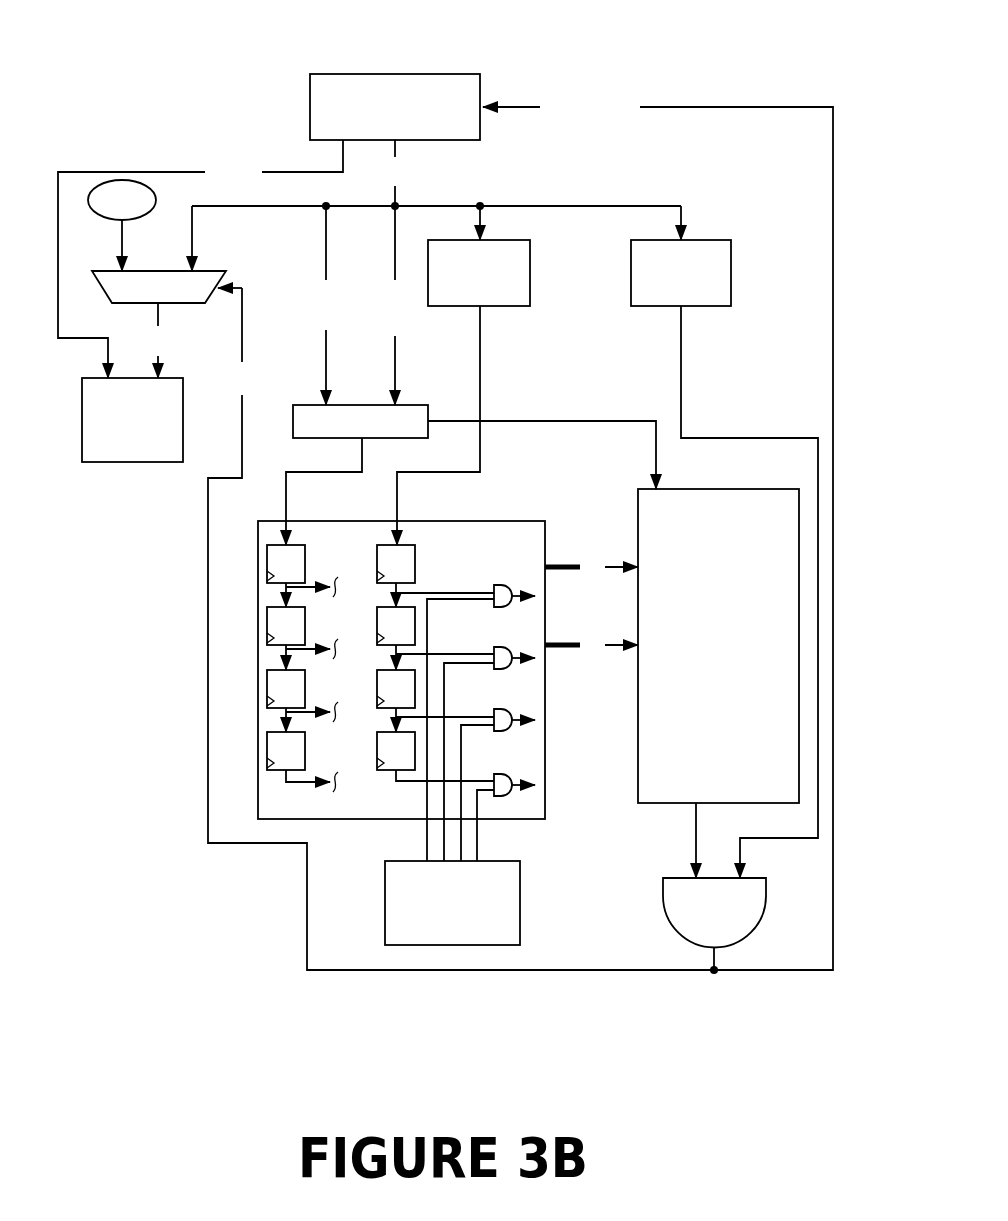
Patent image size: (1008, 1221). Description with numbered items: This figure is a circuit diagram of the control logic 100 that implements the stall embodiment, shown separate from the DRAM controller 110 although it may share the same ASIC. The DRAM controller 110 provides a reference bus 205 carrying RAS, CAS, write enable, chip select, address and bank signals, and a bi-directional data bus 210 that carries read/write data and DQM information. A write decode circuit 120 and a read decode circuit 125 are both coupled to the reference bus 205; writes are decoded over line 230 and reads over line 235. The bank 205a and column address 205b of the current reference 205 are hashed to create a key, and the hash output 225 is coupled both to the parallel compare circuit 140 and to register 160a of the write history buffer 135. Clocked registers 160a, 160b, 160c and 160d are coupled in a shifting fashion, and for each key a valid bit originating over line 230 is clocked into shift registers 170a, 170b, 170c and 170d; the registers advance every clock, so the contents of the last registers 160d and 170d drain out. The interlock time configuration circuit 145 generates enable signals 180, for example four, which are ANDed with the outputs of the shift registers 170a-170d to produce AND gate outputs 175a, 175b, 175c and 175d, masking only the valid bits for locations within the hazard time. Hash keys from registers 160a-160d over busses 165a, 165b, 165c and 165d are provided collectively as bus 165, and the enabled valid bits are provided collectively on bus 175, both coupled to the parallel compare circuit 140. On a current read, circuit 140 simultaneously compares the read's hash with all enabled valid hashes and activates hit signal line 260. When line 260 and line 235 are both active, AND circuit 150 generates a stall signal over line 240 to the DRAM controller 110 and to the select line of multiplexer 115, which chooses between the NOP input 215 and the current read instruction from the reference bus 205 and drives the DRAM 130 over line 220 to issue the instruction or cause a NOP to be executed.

The control logic 100 is at (136, 45).
The DRAM controller 110 is at (455, 141).
The multiplexer 115 is at (208, 271).
The write decode circuit 120 is at (530, 288).
The read decode circuit 125 is at (731, 288).
The DRAM 130 is at (147, 448).
The write history buffer 135 is at (525, 546).
The parallel compare circuit 140 is at (412, 405).
The interlock time configuration circuit 145 is at (520, 917).
The AND circuit 150 is at (727, 935).
The register 160a is at (303, 570).
The register 160b is at (303, 632).
The register 160c is at (303, 695).
The register 160d is at (303, 757).
The bus 165a is at (311, 584).
The bus 165b is at (311, 646).
The bus 165c is at (311, 708).
The bus 165d is at (311, 778).
The bus 165 is at (558, 567).
The shift register 170a is at (413, 570).
The shift register 170b is at (413, 632).
The shift register 170c is at (413, 695).
The shift register 170d is at (413, 757).
The AND gate output 175a is at (521, 589).
The AND gate output 175b is at (523, 650).
The AND gate output 175c is at (523, 712).
The AND gate output 175d is at (523, 776).
The bus 175 is at (558, 645).
The enable signals 180 is at (490, 835).
The reference bus 205 is at (545, 206).
The bank 205a is at (324, 355).
The column address 205b is at (394, 355).
The bi-directional data bus 210 is at (275, 173).
The NOP signal 215 is at (122, 242).
The line 220 is at (158, 312).
The output of the hash circuit 225 is at (309, 472).
The line 230 is at (480, 372).
The line 235 is at (681, 410).
The stall signal line 240 is at (664, 107).
The signal line 260 is at (696, 812).